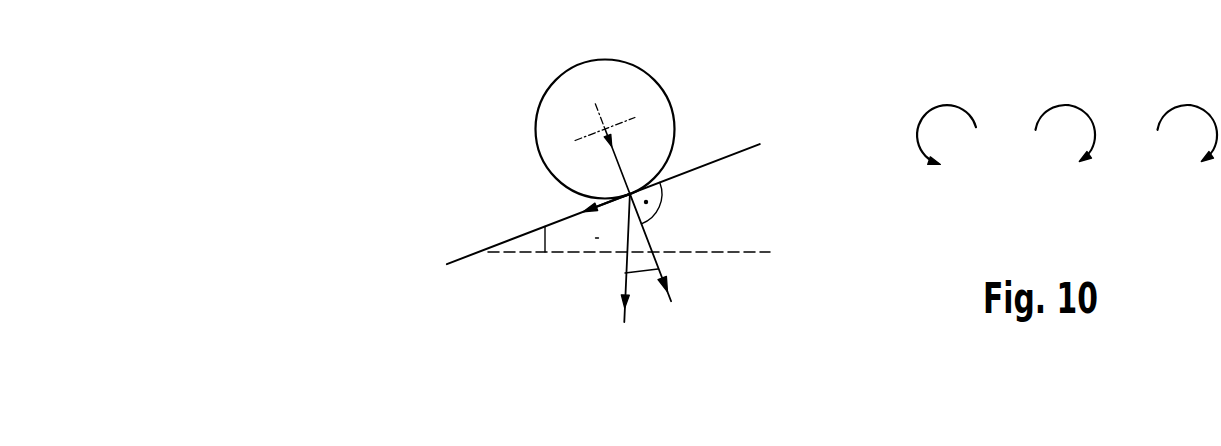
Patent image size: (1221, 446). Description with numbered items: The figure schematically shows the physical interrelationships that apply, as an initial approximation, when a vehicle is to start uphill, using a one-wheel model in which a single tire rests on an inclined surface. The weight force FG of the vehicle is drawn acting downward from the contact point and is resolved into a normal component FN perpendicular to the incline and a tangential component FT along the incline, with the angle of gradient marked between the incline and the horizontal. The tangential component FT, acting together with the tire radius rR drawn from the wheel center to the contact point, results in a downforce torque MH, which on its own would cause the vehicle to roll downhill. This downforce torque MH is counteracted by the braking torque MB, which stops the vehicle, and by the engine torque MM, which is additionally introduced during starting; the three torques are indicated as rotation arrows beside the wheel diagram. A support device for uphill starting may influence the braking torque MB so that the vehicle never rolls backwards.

The tire radius rR is at (619, 162).
The tangential component FT is at (607, 205).
The weight force FG is at (626, 265).
The normal component FN is at (668, 243).
The downforce torque MH is at (948, 136).
The engine torque MM is at (1066, 137).
The braking torque MB is at (1185, 137).